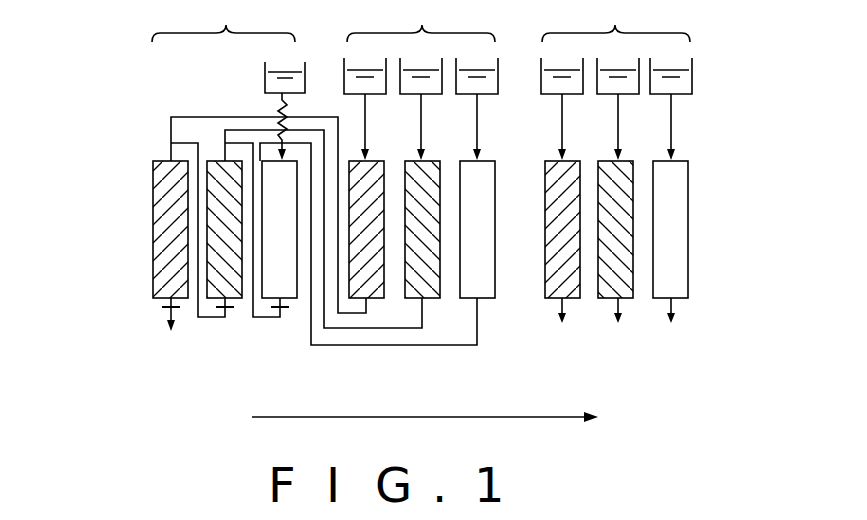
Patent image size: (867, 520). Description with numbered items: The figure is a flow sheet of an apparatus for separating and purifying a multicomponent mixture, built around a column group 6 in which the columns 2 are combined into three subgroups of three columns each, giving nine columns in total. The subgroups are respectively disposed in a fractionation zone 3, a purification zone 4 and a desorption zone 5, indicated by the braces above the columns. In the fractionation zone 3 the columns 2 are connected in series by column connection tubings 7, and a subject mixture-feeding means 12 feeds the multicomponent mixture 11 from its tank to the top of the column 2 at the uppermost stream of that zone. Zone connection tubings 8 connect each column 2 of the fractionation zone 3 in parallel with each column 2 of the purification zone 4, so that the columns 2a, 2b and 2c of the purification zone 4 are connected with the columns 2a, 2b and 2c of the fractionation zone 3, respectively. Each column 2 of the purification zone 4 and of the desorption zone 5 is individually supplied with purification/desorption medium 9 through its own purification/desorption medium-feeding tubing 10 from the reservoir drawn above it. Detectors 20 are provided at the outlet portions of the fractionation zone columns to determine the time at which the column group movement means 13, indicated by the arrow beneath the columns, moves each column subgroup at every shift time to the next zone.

The column 2 is at (157, 221).
The column 2a is at (290, 288).
The column 2b is at (218, 158).
The column 2c is at (153, 292).
The fractionation zone 3 is at (223, 21).
The purification zone 4 is at (421, 21).
The desorption zone 5 is at (616, 21).
The column group 6 is at (79, 134).
The column connection tubing 7 is at (208, 318).
The zone connection tubing 8 is at (345, 314).
The purification/desorption medium 9 is at (497, 73).
The purification/desorption medium-feeding tubing 10 is at (366, 127).
The multicomponent mixture 11 is at (265, 77).
The subject mixture-feeding means 12 is at (283, 107).
The column group movement means 13 is at (513, 416).
The detector 20 is at (179, 310).